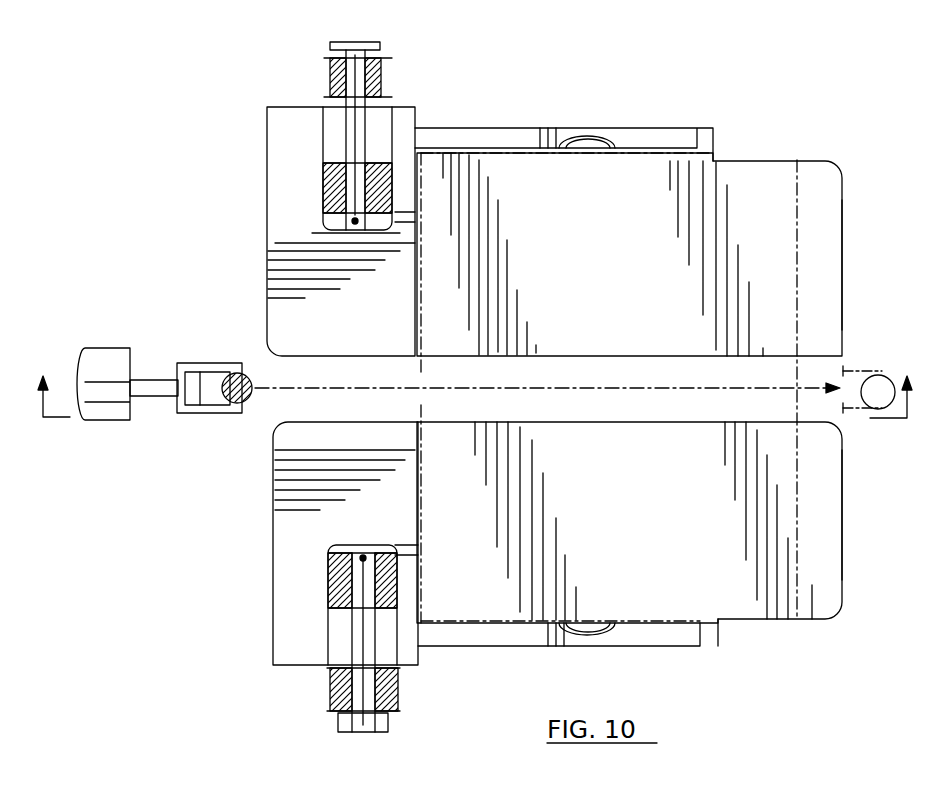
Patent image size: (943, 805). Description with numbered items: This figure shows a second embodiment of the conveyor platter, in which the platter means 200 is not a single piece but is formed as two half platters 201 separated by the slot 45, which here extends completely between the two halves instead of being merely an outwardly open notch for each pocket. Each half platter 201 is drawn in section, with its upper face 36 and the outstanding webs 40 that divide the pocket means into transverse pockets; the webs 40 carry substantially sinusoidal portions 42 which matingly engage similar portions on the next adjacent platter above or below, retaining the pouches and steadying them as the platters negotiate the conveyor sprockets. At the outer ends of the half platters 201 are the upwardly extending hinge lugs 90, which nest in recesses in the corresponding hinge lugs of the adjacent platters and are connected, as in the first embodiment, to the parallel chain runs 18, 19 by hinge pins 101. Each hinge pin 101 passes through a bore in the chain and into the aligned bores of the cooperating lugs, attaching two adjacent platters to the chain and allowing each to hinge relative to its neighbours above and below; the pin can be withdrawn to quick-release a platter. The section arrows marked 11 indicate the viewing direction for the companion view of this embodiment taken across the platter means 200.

The loading station 11 is at (477, 418).
The chain run 18 is at (396, 698).
The chain run 19 is at (384, 80).
The upper face 36 is at (832, 580).
The web 40 is at (503, 135).
The substantially sinusoidal portion 42 is at (593, 133).
The slot 45 is at (815, 377).
The hinge lug 90 is at (335, 126).
The hinge pin 101 is at (358, 70).
The platter means 200 is at (692, 245).
The half platter 201 is at (831, 284).